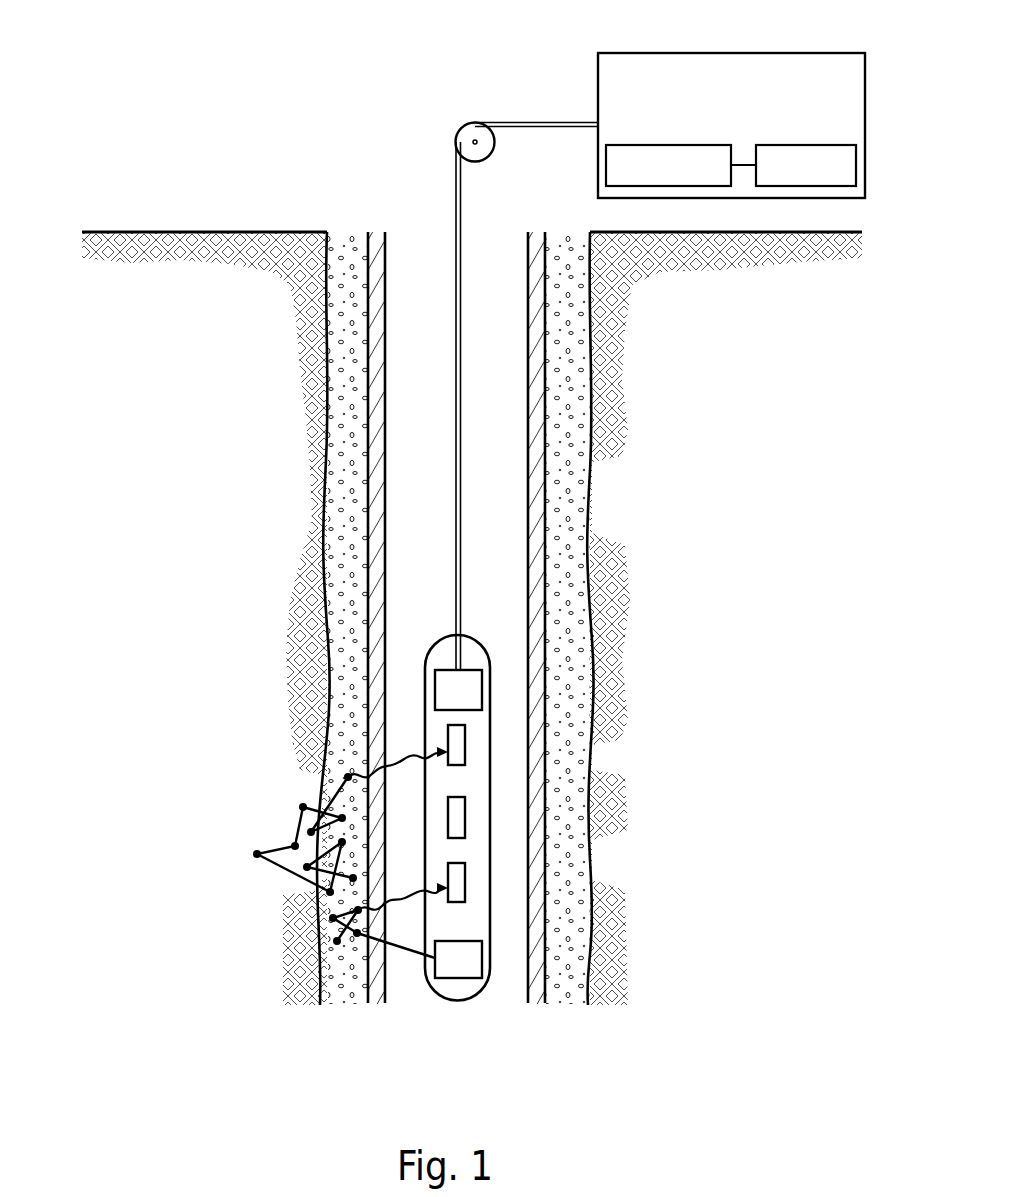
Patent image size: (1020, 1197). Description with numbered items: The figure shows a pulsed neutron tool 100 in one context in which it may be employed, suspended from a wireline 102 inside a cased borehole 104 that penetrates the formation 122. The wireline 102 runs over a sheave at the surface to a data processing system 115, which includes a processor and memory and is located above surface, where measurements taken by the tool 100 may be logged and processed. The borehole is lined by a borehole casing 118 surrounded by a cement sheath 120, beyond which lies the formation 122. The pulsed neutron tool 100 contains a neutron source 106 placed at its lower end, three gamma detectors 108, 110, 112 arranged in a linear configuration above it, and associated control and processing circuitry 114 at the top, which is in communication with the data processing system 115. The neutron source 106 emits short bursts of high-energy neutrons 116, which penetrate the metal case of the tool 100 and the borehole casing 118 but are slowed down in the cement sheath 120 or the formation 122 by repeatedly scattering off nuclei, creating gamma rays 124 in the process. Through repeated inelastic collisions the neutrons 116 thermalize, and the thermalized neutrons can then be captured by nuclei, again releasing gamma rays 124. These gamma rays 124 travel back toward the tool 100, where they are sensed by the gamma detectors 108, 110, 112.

The pulsed neutron tool 100 is at (488, 653).
The wireline 102 is at (461, 356).
The cased borehole 104 is at (381, 186).
The neutron source 106 is at (482, 958).
The gamma detector 108 is at (465, 880).
The gamma detector 110 is at (465, 815).
The gamma detector 112 is at (465, 745).
The control and processing circuitry 114 is at (482, 690).
The data processing system 115 is at (725, 53).
The high-energy neutrons 116 is at (416, 956).
The borehole casing 118 is at (367, 467).
The cement sheath 120 is at (342, 610).
The formation 122 is at (200, 347).
The gamma rays 124 is at (400, 890).